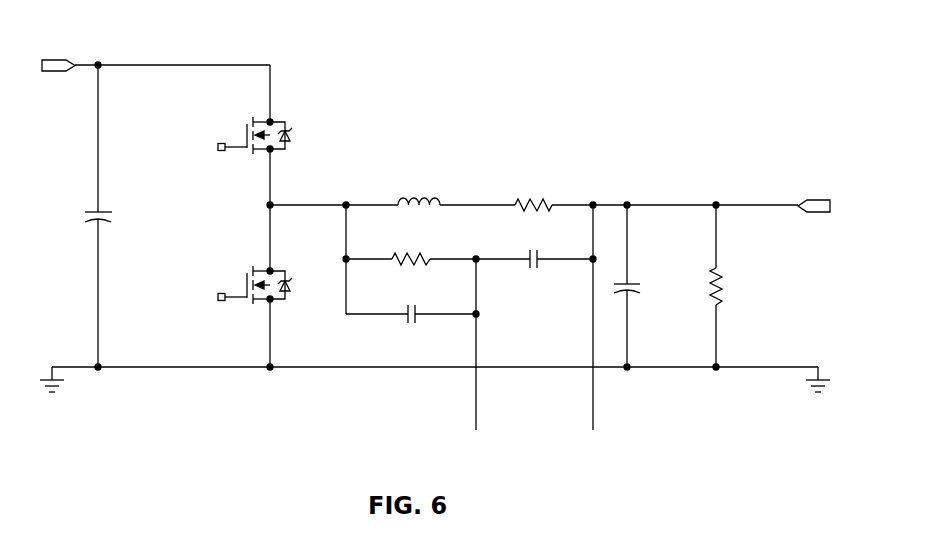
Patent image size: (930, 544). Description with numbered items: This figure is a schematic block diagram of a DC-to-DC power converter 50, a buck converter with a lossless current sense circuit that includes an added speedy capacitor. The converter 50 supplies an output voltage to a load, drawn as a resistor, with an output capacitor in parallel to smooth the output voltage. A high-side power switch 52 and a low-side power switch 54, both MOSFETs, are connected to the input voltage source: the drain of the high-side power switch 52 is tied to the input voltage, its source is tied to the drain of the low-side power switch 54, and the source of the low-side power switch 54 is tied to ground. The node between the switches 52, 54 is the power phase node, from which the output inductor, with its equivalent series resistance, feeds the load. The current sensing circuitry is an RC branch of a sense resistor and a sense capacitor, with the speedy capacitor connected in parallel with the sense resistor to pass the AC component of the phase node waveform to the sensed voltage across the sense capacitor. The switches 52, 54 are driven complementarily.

The DC-to-DC power converter 50 is at (435, 219).
The high-side power switch 52 is at (282, 121).
The low-side power switch 54 is at (282, 270).